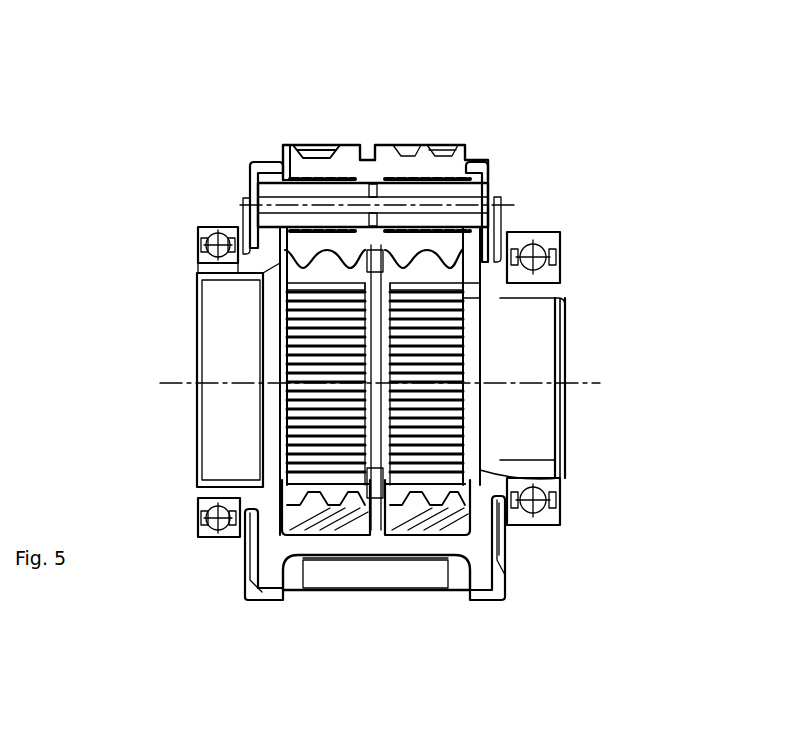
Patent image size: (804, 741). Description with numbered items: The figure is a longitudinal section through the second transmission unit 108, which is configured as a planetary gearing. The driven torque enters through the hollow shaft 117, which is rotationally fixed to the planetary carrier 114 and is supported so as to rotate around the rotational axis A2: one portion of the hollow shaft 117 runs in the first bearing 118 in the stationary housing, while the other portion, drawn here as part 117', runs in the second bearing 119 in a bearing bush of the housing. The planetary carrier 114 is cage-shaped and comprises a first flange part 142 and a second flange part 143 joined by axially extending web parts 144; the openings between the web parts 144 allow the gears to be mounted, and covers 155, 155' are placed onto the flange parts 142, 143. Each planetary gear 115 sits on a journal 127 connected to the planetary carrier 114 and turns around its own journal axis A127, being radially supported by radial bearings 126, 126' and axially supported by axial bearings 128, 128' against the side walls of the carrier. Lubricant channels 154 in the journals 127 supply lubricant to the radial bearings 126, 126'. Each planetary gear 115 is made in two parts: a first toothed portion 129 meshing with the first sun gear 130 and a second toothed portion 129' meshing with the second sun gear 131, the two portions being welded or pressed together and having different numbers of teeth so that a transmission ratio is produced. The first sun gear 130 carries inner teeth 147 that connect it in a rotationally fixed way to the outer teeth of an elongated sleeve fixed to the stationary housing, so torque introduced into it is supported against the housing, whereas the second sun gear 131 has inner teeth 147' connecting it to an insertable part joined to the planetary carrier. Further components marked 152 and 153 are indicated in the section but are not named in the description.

The second transmission unit 108 is at (383, 66).
The planetary carrier 114 is at (320, 607).
The planetary gears 115 is at (394, 112).
The hollow shaft 117 is at (197, 396).
The housing part 117' is at (558, 367).
The first bearing 118 is at (208, 226).
The second bearing 119 is at (552, 233).
The radial bearing 126 is at (458, 118).
The radial bearing 126' is at (329, 133).
The journal 127 is at (413, 190).
The axial bearing 128 is at (513, 200).
The axial bearing 128' is at (251, 140).
The first toothed portion 129 is at (441, 153).
The second toothed portion 129' is at (311, 158).
The first sun gear 130 is at (477, 437).
The second sun gear 131 is at (275, 480).
The first flange part 142 is at (270, 563).
The second flange part 143 is at (500, 541).
The web parts 144 is at (378, 548).
The inner teeth 147 is at (508, 367).
The inner teeth 147' is at (241, 381).
The lower cam block 152 is at (413, 540).
The bearing 153 is at (500, 470).
The lubricant channels 154 is at (270, 195).
The cover 155 is at (536, 559).
The cover 155' is at (193, 193).
The rotational axis A2 is at (178, 386).
The journal axis A127 is at (480, 202).